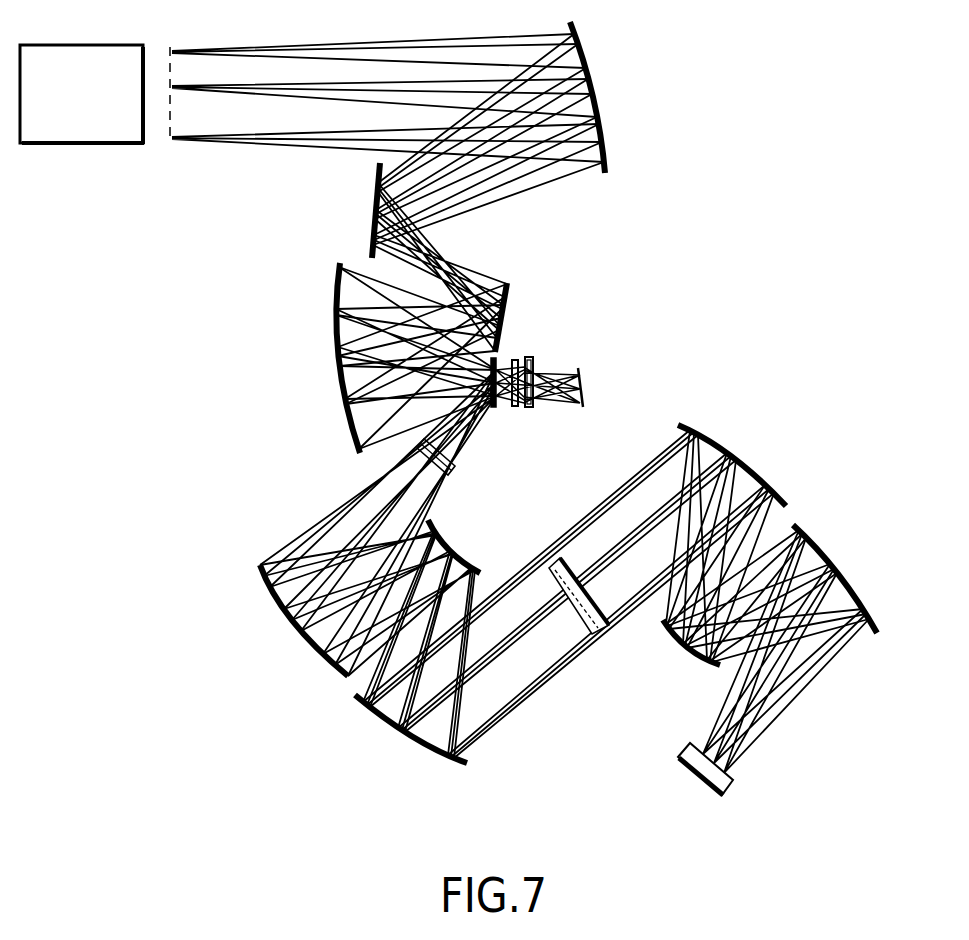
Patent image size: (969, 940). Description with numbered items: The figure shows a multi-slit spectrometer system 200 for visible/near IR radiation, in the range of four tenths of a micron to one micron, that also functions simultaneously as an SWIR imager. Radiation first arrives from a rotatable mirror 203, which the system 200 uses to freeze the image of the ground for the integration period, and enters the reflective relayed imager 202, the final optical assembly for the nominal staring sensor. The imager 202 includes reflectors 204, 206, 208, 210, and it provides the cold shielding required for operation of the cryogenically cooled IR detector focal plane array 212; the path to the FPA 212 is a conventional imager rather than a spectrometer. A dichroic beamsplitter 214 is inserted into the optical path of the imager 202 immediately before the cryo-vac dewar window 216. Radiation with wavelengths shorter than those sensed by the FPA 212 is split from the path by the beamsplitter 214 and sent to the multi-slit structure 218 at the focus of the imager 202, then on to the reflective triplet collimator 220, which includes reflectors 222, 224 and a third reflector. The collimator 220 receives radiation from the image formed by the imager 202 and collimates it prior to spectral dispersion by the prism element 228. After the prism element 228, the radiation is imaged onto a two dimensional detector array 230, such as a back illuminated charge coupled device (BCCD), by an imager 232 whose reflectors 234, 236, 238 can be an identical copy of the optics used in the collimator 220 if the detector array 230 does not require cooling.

The multi-slit spectrometer system 200 is at (735, 304).
The reflective relayed imager 202 is at (534, 230).
The rotatable mirror 203 is at (70, 146).
The reflector 204 is at (606, 150).
The reflector 206 is at (380, 179).
The reflector 208 is at (509, 284).
The reflector 210 is at (334, 308).
The IR detector focal plane array (FPA) 212 is at (584, 371).
The dichroic beamsplitter 214 is at (500, 360).
The cryo-vac dewar window 216 is at (508, 408).
The multi-slit structure 218 is at (455, 456).
The reflective triplet collimator 220 is at (234, 538).
The reflector 222 is at (284, 609).
The reflector 224 is at (480, 553).
The prism element 228 is at (605, 632).
The two dimensional detector array 230 is at (685, 768).
The imager 232 is at (830, 711).
The camera primary mirror 234 is at (735, 455).
The camera secondary mirror 236 is at (703, 657).
The camera tertiary mirror 238 is at (840, 560).